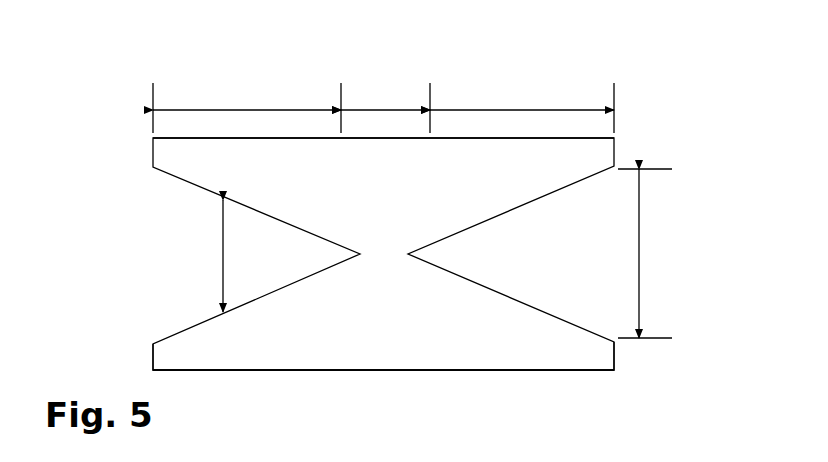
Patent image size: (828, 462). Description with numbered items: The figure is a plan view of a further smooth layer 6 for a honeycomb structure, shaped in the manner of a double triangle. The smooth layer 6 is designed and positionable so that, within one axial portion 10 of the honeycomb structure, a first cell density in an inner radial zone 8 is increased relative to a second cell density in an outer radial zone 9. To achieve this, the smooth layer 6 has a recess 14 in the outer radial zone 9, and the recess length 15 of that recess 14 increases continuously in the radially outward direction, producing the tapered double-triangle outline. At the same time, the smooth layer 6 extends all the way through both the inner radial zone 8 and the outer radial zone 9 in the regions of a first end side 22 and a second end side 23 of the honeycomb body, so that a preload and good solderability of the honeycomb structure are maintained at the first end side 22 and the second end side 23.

The smooth layer 6 is at (160, 160).
The inner radial zone 8 is at (373, 103).
The outer radial zone 9 is at (228, 106).
The axial portion 10 is at (640, 248).
The recess 14 is at (181, 310).
The recess length 15 is at (222, 258).
The first end side 22 is at (426, 370).
The second end side 23 is at (610, 135).